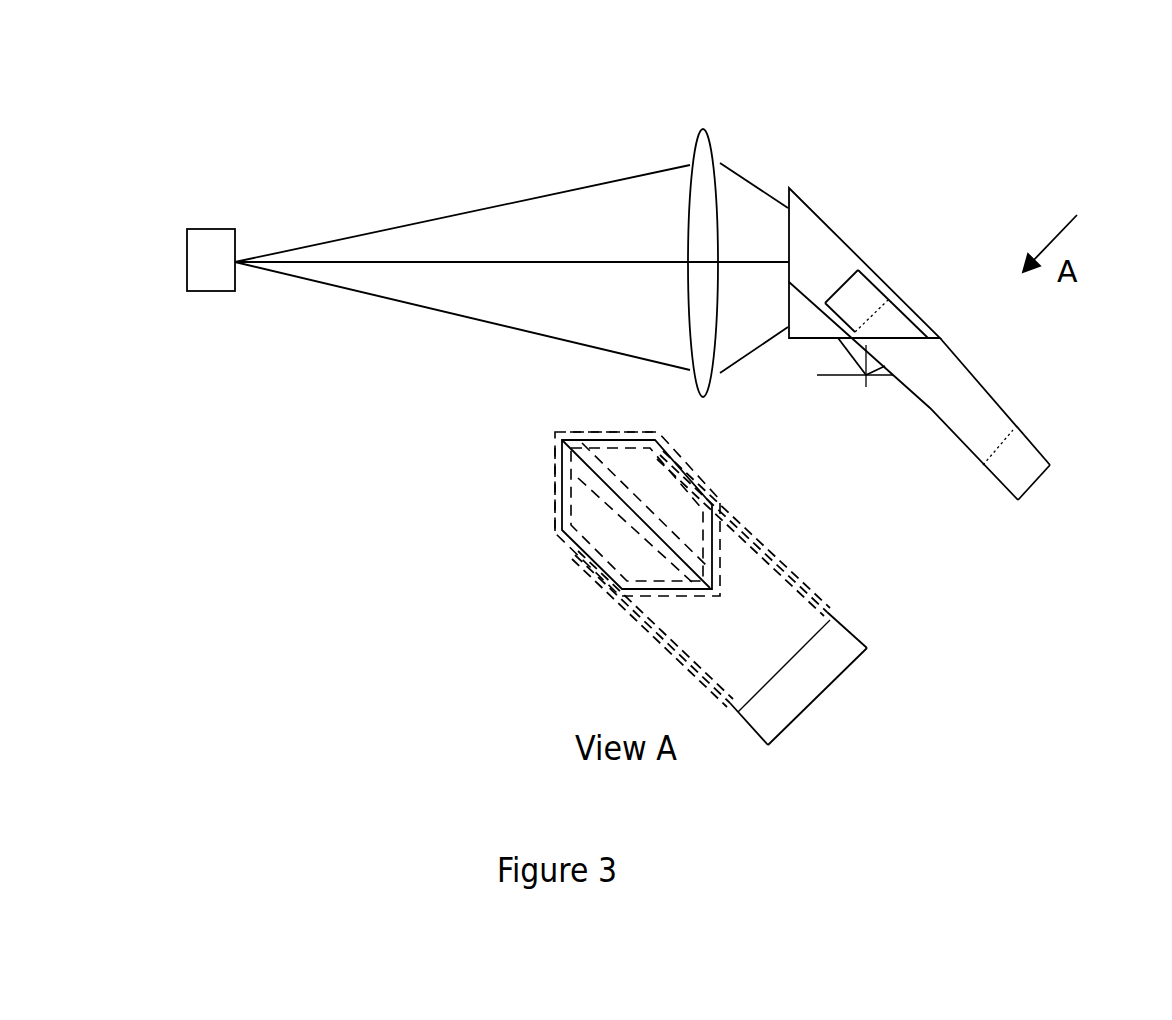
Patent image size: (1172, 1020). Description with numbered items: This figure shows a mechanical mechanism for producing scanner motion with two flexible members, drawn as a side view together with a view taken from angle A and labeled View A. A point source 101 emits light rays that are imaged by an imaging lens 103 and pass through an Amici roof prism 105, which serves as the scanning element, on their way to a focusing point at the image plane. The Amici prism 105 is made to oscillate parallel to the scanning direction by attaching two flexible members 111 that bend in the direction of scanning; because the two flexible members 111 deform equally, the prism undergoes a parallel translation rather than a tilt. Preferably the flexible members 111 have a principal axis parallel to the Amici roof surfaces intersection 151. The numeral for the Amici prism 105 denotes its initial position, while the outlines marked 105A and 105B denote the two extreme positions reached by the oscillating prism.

The point source 101 is at (187, 247).
The imaging lens 103 is at (708, 155).
The Amici roof prism 105 is at (803, 228).
The extreme position of the oscillating Amici prism 105A is at (556, 472).
The extreme position of the oscillating Amici prism 105B is at (660, 436).
The flexible members 111 is at (962, 422).
The Amici roof surfaces intersection 151 is at (827, 227).